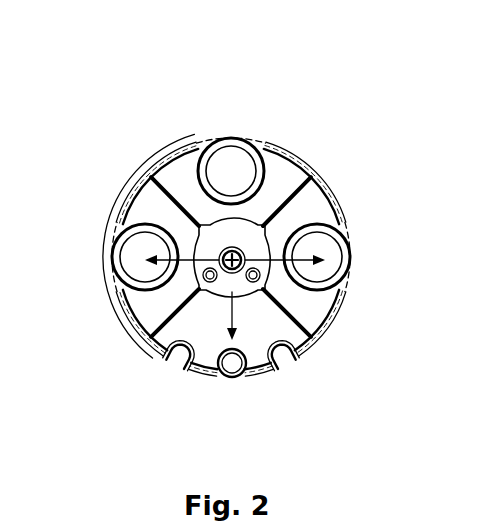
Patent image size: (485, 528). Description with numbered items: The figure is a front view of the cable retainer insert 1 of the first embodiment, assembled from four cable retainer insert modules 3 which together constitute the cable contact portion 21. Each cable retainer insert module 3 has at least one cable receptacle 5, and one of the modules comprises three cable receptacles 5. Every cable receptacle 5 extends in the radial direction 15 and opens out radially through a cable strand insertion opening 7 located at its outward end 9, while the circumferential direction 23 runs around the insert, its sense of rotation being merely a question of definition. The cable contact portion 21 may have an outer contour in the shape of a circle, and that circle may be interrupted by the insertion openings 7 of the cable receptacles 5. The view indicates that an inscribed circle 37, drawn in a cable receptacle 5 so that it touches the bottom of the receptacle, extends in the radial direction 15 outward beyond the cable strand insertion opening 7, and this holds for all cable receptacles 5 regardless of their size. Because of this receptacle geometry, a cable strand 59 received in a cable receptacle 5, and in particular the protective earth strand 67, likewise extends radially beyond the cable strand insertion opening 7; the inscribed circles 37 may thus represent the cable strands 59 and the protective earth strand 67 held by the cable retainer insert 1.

The cable retainer insert 1 is at (140, 40).
The cable retainer insert module 3 is at (290, 148).
The cable receptacle 5 is at (206, 128).
The cable strand insertion opening 7 is at (264, 143).
The outward end 9 is at (229, 245).
The radial direction 15 is at (200, 262).
The cable contact portion 21 is at (369, 285).
The circumferential direction 23 is at (133, 175).
The inscribed circle 37 is at (231, 261).
The cable strand 59 is at (228, 138).
The protective earth strand 67 is at (229, 377).